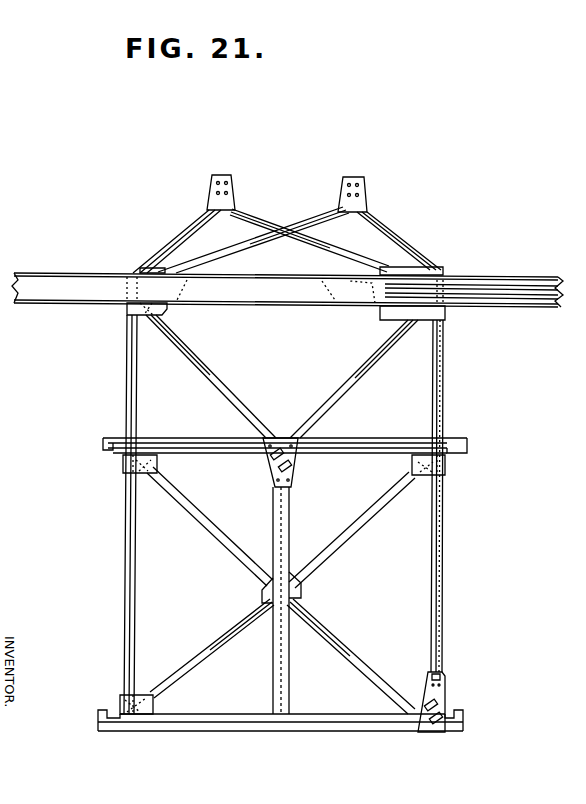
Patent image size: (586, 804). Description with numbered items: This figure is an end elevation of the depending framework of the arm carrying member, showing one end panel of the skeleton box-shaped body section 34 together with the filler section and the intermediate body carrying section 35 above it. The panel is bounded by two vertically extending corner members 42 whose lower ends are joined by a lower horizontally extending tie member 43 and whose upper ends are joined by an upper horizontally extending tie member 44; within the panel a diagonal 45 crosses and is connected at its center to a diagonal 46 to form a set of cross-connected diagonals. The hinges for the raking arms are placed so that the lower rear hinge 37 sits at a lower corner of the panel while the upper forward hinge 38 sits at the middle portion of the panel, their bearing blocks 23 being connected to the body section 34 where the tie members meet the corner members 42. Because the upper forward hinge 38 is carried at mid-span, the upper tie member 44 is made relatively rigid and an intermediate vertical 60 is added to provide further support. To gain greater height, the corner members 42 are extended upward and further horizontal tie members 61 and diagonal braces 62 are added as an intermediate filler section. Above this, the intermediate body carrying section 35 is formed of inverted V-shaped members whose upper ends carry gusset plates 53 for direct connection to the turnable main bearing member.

The bearing block 23 is at (280, 442).
The body section 34 is at (282, 643).
The intermediate body carrying section 35 is at (287, 234).
The lower hinge 37 is at (474, 717).
The upper hinge 38 is at (276, 409).
The corner member 42 is at (130, 550).
The lower horizontally extending tie member 43 is at (321, 720).
The upper horizontally extending tie member 44 is at (453, 440).
The diagonal 45 is at (178, 493).
The diagonal 46 is at (378, 490).
The gusset plate 53 is at (215, 192).
The intermediate vertical 60 is at (282, 676).
The horizontal tie member 61 is at (472, 292).
The diagonal brace 62 is at (196, 338).